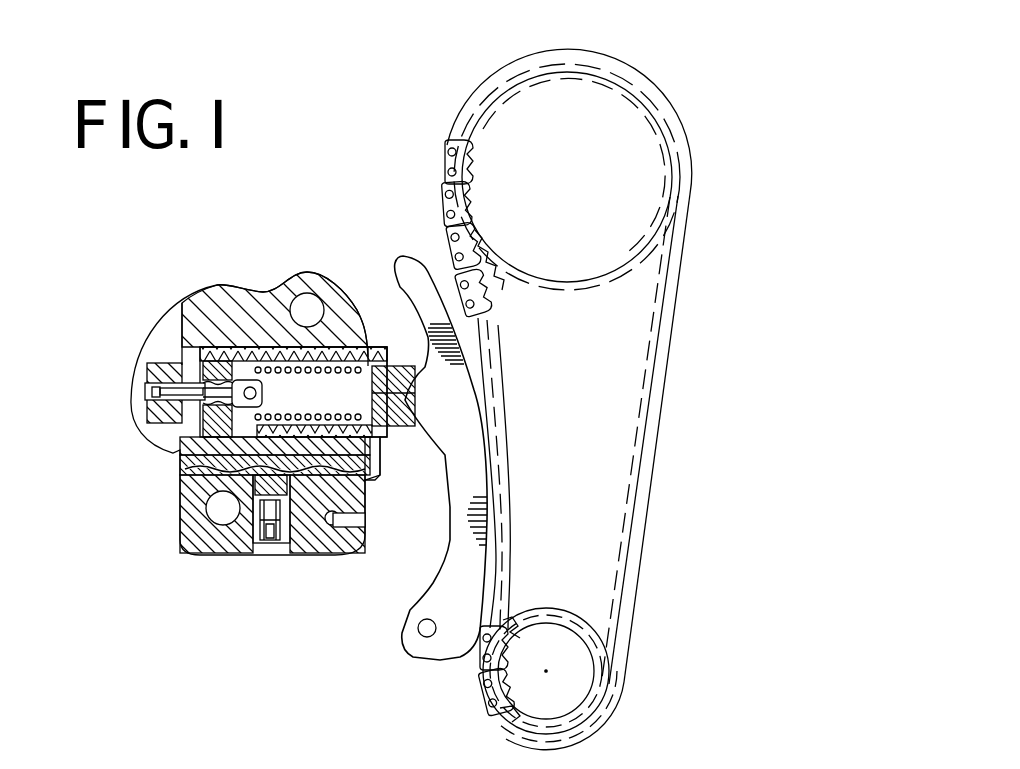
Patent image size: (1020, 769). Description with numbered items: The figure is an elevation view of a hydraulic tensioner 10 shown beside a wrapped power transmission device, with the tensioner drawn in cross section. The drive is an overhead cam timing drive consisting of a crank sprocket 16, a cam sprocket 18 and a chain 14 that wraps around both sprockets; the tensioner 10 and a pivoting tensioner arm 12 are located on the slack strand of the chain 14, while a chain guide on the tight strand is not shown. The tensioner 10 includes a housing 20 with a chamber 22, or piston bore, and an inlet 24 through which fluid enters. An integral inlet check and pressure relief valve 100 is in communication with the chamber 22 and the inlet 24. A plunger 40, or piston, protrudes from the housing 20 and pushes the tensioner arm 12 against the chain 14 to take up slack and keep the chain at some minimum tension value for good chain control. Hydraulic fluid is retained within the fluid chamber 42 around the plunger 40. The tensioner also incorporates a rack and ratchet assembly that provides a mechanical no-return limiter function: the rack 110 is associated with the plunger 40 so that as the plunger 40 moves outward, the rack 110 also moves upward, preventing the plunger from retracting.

The hydraulic tensioner 10 is at (210, 258).
The tensioner arm 12 is at (395, 267).
The chain 14 is at (440, 205).
The crank sprocket 16 is at (533, 687).
The cam sprocket 18 is at (523, 133).
The housing 20 is at (193, 313).
The chamber 22 is at (257, 357).
The inlet 24 is at (153, 392).
The plunger 40 is at (395, 367).
The fluid chamber 42 is at (343, 393).
The integral inlet check and pressure relief valve 100 is at (160, 462).
The rack 110 is at (378, 463).